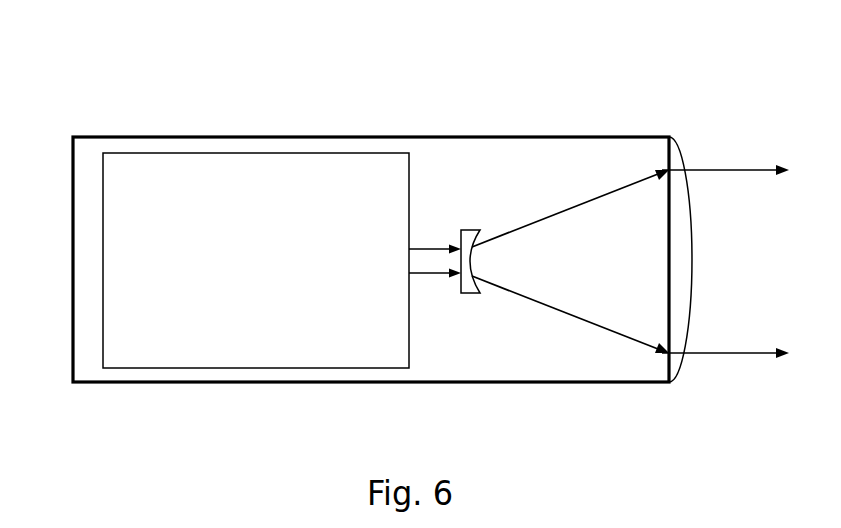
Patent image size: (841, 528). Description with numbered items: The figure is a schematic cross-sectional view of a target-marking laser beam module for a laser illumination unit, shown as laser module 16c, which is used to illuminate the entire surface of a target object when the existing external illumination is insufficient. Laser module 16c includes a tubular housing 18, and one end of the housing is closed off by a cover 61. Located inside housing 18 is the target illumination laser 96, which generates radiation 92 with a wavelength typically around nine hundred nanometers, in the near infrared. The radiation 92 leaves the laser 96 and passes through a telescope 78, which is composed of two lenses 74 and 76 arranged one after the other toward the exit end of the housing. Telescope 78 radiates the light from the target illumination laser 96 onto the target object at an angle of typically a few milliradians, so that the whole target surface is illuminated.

The laser module 16c is at (202, 86).
The tubular housing 18 is at (165, 385).
The cover 61 is at (73, 365).
The target illumination laser 96 is at (302, 367).
The lens 74 is at (473, 293).
The telescope 78 is at (577, 164).
The radiation 92 is at (522, 225).
The lens 76 is at (682, 265).